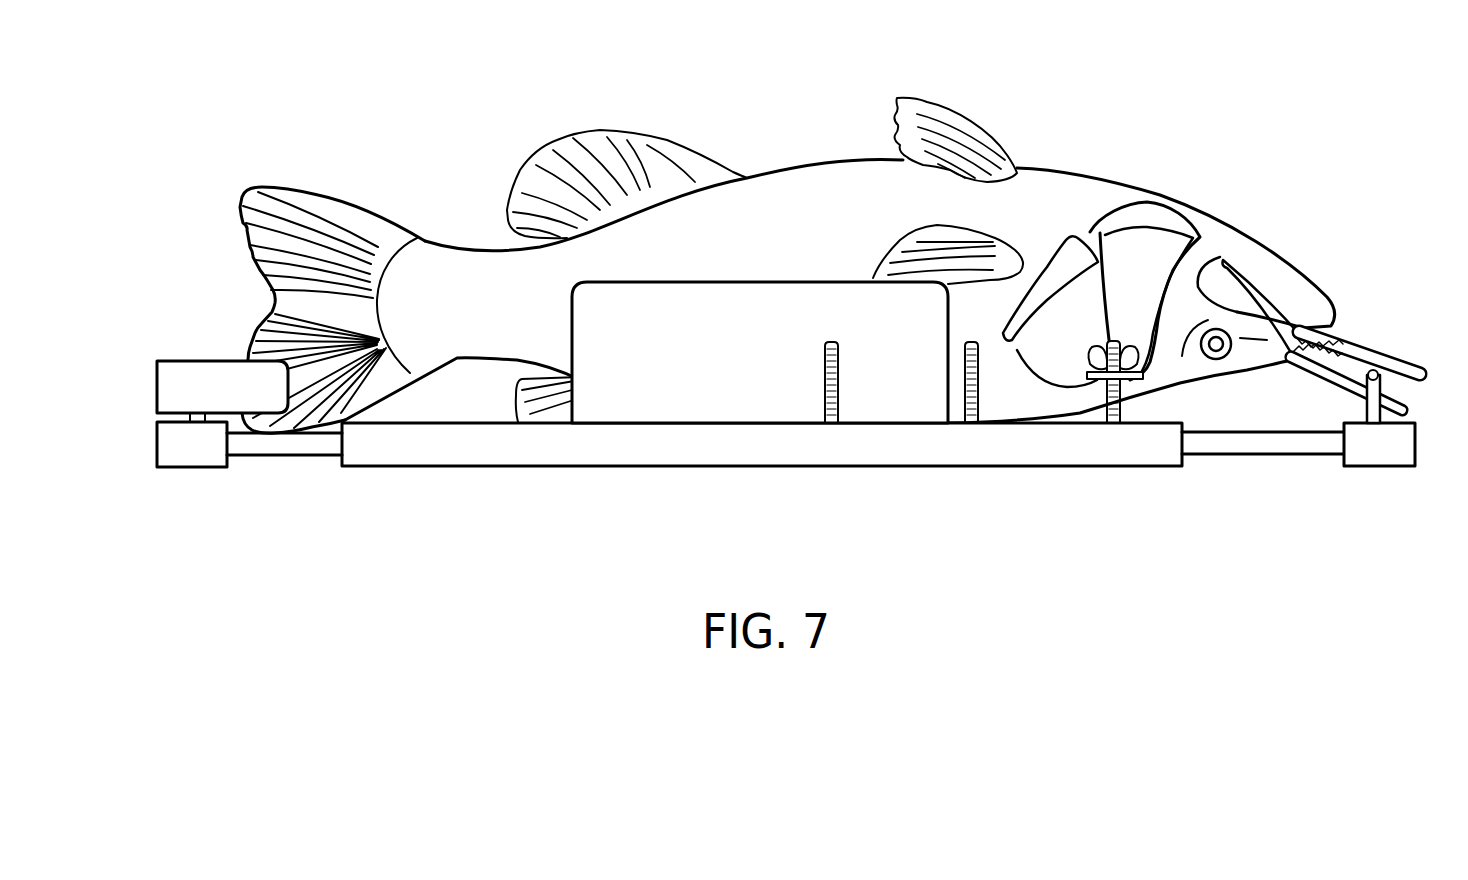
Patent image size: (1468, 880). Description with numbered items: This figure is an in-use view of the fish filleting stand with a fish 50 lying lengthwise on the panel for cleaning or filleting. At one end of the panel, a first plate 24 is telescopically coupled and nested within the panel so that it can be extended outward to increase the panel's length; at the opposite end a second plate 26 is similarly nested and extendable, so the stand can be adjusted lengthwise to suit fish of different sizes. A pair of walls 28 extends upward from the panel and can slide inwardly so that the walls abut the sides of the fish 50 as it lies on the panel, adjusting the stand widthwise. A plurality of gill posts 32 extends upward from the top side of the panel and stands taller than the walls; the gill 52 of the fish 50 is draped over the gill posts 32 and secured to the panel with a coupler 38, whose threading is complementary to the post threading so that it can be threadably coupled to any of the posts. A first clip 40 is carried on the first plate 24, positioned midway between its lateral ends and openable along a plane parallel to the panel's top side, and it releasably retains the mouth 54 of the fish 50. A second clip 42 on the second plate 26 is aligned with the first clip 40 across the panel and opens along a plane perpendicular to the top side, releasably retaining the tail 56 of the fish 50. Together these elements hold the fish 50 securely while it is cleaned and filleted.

The first plate 24 is at (1308, 448).
The second plate 26 is at (277, 445).
The pair of walls 28 is at (668, 362).
The plurality of gill posts 32 is at (1110, 405).
The coupler 38 is at (1137, 353).
The first clip 40 is at (1393, 362).
The second clip 42 is at (173, 379).
The fish 50 is at (827, 197).
The gill 52 is at (1146, 254).
The mouth 54 is at (1278, 318).
The tail 56 is at (303, 210).